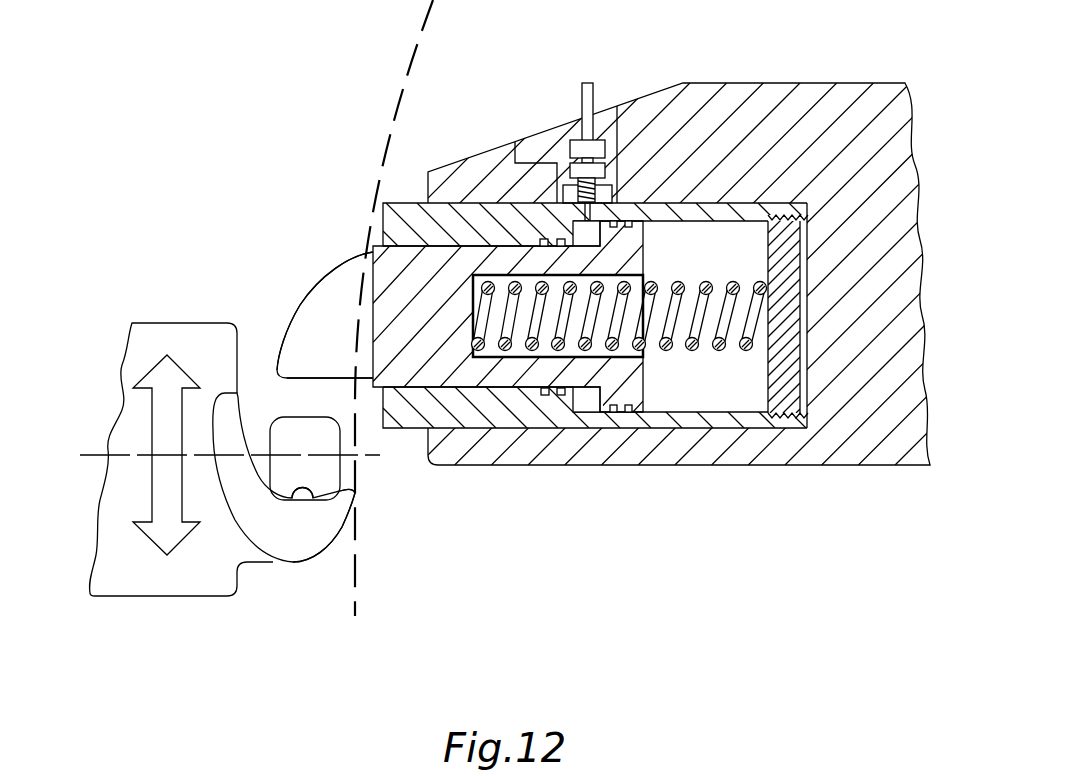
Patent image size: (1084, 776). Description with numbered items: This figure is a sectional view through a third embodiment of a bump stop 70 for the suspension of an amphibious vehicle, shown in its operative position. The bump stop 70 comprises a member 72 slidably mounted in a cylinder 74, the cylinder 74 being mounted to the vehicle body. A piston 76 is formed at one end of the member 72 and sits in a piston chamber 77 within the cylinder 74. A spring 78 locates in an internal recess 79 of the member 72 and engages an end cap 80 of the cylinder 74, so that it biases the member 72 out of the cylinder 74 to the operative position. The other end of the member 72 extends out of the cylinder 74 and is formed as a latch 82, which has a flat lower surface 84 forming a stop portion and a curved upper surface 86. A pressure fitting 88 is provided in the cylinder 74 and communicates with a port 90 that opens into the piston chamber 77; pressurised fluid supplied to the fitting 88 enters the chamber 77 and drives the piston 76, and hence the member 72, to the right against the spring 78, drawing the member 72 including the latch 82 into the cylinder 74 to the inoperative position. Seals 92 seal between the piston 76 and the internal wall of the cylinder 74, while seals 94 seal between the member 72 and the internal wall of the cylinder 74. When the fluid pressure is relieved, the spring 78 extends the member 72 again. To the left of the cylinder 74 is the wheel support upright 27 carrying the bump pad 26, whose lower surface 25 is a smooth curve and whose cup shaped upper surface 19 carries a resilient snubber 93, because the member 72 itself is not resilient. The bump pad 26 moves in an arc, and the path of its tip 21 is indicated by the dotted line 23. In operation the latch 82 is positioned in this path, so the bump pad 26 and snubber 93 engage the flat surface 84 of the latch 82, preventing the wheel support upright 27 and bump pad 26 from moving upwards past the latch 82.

The upper surface 19 is at (312, 498).
The tip 21 is at (352, 490).
The dotted line 23 is at (400, 70).
The lower surface 25 is at (320, 556).
The bump pad 26 is at (287, 543).
The wheel support upright 27 is at (143, 578).
The bump stop 70 is at (484, 96).
The member 72 is at (392, 268).
The cylinder 74 is at (675, 422).
The piston 76 is at (586, 412).
The piston chamber 77 is at (578, 233).
The spring 78 is at (732, 283).
The internal recess 79 is at (527, 353).
The end cap 80 is at (765, 387).
The latch 82 is at (314, 330).
The flat lower surface 84 is at (303, 378).
The curved upper surface 86 is at (316, 288).
The pressure fitting 88 is at (572, 148).
The port 90 is at (618, 200).
The seals 92 is at (616, 228).
The resilient snubber 93 is at (318, 472).
The seals 94 is at (561, 396).